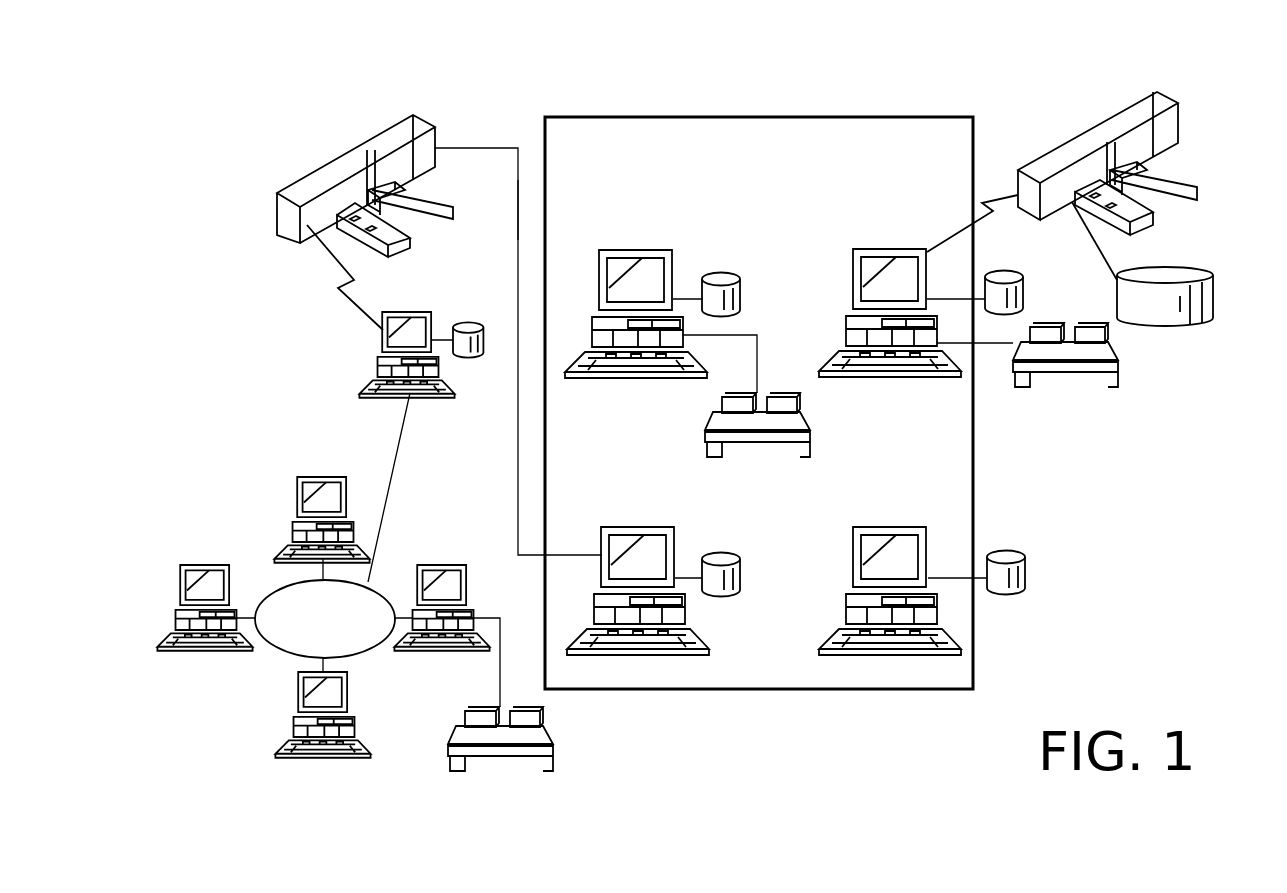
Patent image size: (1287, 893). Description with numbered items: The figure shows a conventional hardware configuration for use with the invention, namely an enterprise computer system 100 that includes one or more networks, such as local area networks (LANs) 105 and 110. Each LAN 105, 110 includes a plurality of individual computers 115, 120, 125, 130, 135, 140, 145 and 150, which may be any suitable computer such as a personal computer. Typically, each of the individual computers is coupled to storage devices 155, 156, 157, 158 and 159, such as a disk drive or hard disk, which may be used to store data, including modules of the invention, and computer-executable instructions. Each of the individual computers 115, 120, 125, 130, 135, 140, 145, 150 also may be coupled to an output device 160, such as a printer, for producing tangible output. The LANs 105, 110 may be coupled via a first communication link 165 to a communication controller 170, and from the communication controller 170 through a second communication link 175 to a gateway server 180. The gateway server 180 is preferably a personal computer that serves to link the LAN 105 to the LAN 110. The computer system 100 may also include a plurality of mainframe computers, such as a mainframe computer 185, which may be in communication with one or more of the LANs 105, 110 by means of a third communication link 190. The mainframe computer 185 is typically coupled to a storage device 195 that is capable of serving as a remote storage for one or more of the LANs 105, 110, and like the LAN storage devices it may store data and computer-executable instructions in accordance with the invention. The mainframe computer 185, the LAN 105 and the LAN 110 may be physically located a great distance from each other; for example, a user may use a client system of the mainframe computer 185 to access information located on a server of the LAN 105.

The enterprise computer system 100 is at (533, 125).
The local area network 105 is at (660, 167).
The local area network 110 is at (295, 657).
The individual computer 115 is at (668, 248).
The individual computer 120 is at (913, 248).
The individual computer 125 is at (665, 527).
The individual computer 130 is at (920, 527).
The individual computer 135 is at (462, 565).
The individual computer 140 is at (347, 710).
The individual computer 145 is at (223, 565).
The individual computer 150 is at (343, 475).
The storage device 155 is at (740, 300).
The storage device 156 is at (740, 578).
The storage device 157 is at (460, 350).
The storage device 158 is at (1025, 575).
The storage device 159 is at (1023, 297).
The output device 160 is at (738, 440).
The first communication link 165 is at (517, 237).
The communication controller 170 is at (300, 188).
The second communication link 175 is at (345, 305).
The gateway server 180 is at (388, 312).
The mainframe computer 185 is at (1173, 128).
The third communication link 190 is at (988, 197).
The storage device 195 is at (1210, 300).